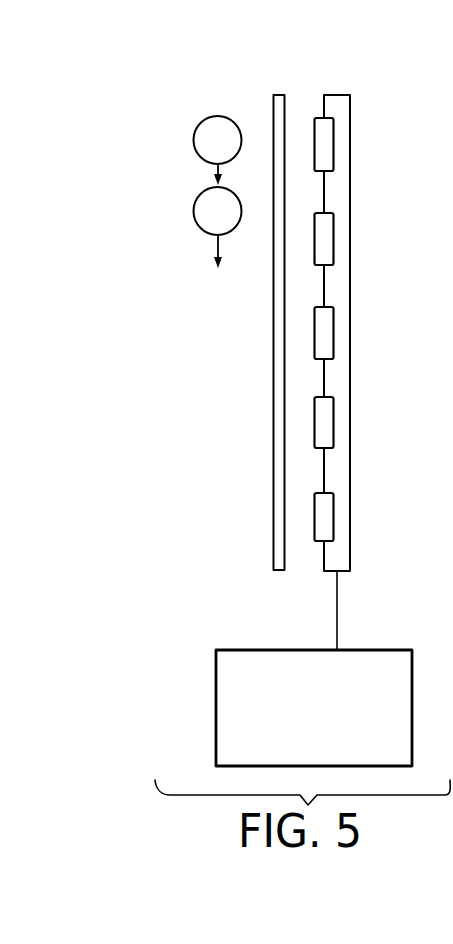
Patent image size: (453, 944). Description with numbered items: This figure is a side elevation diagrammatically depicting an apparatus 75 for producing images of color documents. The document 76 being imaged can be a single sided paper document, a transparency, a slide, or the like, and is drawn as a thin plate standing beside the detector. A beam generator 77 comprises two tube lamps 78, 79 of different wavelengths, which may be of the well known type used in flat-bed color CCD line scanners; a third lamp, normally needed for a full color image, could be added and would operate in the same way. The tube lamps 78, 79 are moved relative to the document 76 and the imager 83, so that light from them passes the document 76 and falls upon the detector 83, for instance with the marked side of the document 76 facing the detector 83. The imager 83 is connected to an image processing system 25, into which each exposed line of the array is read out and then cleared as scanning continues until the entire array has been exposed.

The image processing system 25 is at (216, 712).
The apparatus 75 is at (138, 165).
The document 76 is at (275, 573).
The beam generator 77 is at (191, 170).
The tube lamp 78 is at (237, 121).
The tube lamp 79 is at (200, 229).
The imager 83 is at (373, 136).